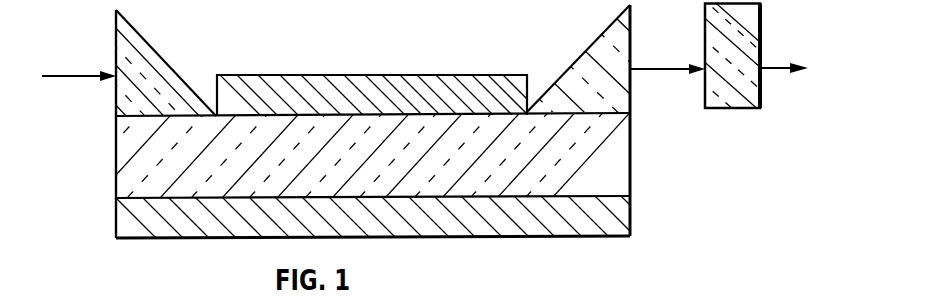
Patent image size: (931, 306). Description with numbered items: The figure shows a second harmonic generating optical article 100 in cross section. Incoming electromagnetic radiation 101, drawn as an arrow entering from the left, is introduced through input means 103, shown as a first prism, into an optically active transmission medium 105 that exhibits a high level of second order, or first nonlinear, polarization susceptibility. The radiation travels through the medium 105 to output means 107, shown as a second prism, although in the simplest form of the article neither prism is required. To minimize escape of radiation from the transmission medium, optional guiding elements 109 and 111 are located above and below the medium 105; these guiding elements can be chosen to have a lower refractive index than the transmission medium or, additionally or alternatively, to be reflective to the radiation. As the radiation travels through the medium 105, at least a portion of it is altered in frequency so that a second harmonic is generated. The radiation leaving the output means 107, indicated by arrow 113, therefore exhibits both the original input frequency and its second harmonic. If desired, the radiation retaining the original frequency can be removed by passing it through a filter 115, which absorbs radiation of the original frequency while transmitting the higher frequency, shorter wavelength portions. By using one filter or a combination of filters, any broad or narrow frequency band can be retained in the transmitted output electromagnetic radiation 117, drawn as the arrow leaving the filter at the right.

The optical article 100 is at (88, 192).
The electromagnetic radiation 101 is at (68, 75).
The input means 103 is at (163, 58).
The optically active transmission medium 105 is at (633, 148).
The output means 107 is at (585, 51).
The guiding element 109 is at (362, 73).
The guiding element 111 is at (534, 238).
The electromagnetic radiation leaving the output means 113 is at (660, 68).
The filter 115 is at (741, 108).
The transmitted output electromagnetic radiation 117 is at (773, 66).